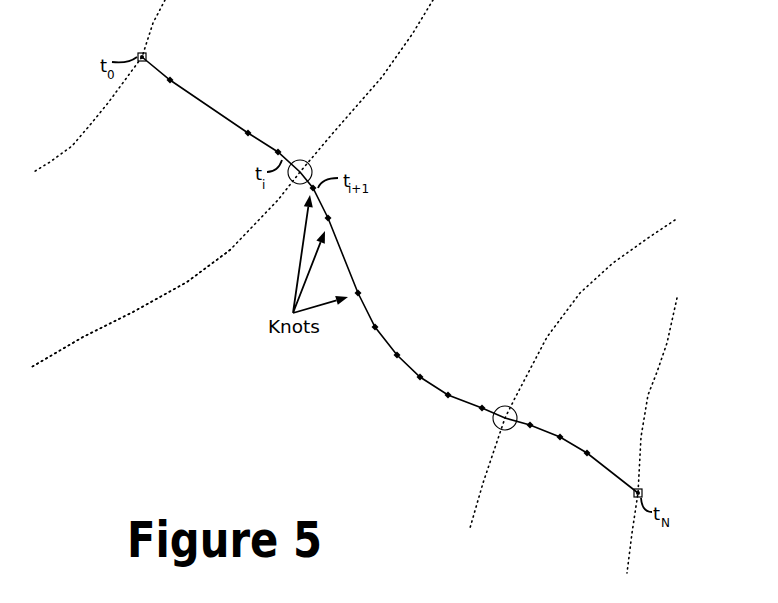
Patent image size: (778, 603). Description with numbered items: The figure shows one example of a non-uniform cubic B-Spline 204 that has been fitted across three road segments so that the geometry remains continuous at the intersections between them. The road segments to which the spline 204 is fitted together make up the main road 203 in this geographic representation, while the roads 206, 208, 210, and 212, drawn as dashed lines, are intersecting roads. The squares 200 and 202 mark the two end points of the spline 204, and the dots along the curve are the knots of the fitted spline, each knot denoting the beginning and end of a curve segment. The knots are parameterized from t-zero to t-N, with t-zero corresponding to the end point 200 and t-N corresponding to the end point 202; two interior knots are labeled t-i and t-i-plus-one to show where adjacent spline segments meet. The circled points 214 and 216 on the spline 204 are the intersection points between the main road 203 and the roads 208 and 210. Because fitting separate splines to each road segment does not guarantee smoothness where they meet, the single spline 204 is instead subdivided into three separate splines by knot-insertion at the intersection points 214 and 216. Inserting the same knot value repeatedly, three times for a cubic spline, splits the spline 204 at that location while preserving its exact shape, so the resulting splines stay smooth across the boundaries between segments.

The end point of spline 200 is at (140, 52).
The end point of spline 202 is at (640, 490).
The main road 203 is at (374, 357).
The non-uniform cubic B-Spline 204 is at (216, 68).
The intersecting road 206 is at (80, 135).
The intersecting road 208 is at (188, 281).
The intersecting road 210 is at (482, 485).
The intersecting road 212 is at (632, 545).
The intersection point 214 is at (302, 160).
The intersection point 216 is at (504, 406).